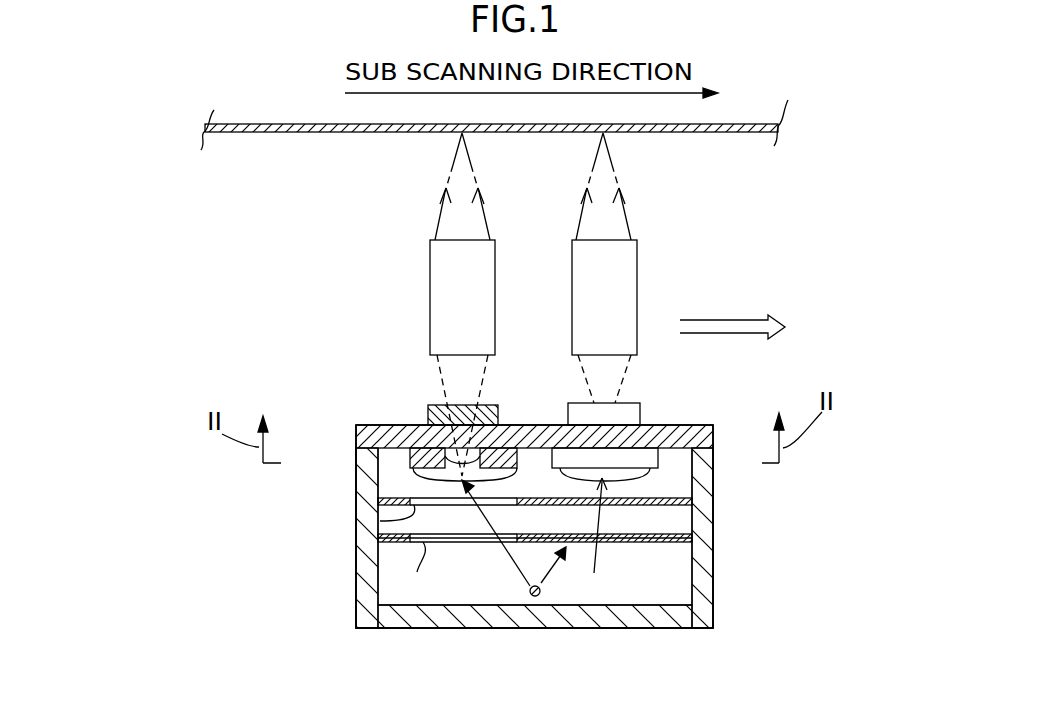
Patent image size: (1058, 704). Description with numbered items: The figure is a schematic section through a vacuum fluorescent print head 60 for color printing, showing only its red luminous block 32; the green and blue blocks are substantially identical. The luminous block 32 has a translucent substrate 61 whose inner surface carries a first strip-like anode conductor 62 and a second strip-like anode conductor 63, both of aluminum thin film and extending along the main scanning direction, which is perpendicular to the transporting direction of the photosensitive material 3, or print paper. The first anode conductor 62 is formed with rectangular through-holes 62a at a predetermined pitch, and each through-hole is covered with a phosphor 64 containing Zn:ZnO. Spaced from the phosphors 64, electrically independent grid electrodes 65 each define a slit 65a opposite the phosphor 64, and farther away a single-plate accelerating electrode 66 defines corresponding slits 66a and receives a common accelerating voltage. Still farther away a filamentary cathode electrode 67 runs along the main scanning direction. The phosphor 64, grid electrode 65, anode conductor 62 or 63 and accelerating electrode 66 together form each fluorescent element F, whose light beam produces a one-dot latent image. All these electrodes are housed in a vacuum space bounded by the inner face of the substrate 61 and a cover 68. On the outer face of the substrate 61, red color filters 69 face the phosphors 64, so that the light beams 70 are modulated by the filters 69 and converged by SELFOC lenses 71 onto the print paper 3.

The photosensitive material 3 is at (312, 124).
The luminous block 32 is at (752, 604).
The vacuum fluorescent print head 60 is at (352, 421).
The substrate 61 is at (690, 425).
The first strip-like anode conductor 62 is at (410, 458).
The through-hole 62a is at (457, 470).
The second strip-like anode conductor 63 is at (660, 468).
The phosphor 64 is at (415, 478).
The grid electrode 65 is at (690, 538).
The slit 65a is at (416, 517).
The accelerating electrode 66 is at (662, 545).
The slit 66a is at (416, 576).
The filamentary cathode electrode 67 is at (535, 597).
The cover 68 is at (357, 578).
The red color filter 69 is at (428, 406).
The light beam 70 is at (438, 211).
The SELFOC lens 71 is at (430, 289).
The fluorescent element F is at (534, 542).